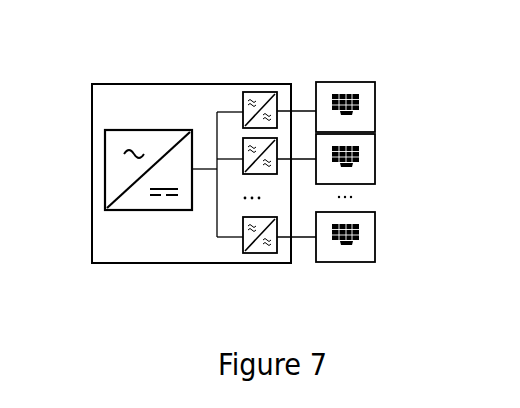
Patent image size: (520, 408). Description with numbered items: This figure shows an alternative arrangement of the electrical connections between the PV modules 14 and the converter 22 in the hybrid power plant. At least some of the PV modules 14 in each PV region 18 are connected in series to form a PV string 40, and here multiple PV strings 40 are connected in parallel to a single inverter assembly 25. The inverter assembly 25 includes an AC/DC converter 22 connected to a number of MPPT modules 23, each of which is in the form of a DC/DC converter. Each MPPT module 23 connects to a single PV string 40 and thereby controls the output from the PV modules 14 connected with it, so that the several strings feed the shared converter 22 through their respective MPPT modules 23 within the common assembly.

The PV module 14 is at (352, 93).
The PV region 18 is at (377, 247).
The converter 22 is at (123, 132).
The MPPT module 23 is at (272, 91).
The inverter assembly 25 is at (190, 84).
The PV string 40 is at (358, 110).